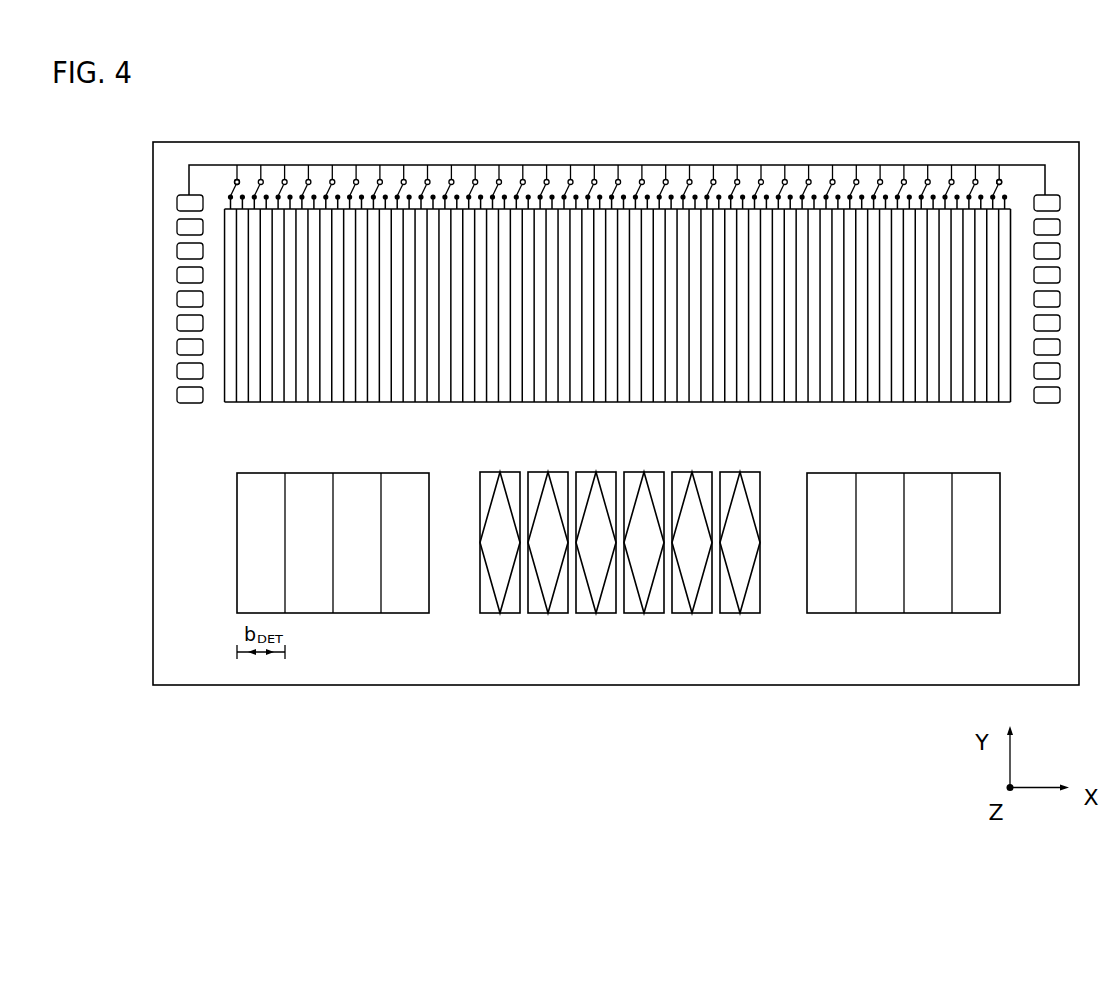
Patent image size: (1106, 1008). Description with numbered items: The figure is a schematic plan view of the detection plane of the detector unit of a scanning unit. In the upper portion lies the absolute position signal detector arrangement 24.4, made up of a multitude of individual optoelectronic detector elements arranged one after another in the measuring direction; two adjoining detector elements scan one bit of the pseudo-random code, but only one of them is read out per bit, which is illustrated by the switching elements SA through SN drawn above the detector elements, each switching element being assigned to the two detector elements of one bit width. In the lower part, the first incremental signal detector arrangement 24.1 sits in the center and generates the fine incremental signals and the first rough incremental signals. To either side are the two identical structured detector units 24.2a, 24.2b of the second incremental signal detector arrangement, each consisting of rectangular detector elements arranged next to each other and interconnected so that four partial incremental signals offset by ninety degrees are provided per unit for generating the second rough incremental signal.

The absolute position signal detector arrangement 24.4 is at (576, 195).
The first incremental signal detector arrangement 24.1 is at (599, 637).
The detector unit 24.2a is at (353, 613).
The detector unit 24.2b is at (927, 613).
The switching element SA is at (234, 182).
The switching element SN is at (1002, 182).